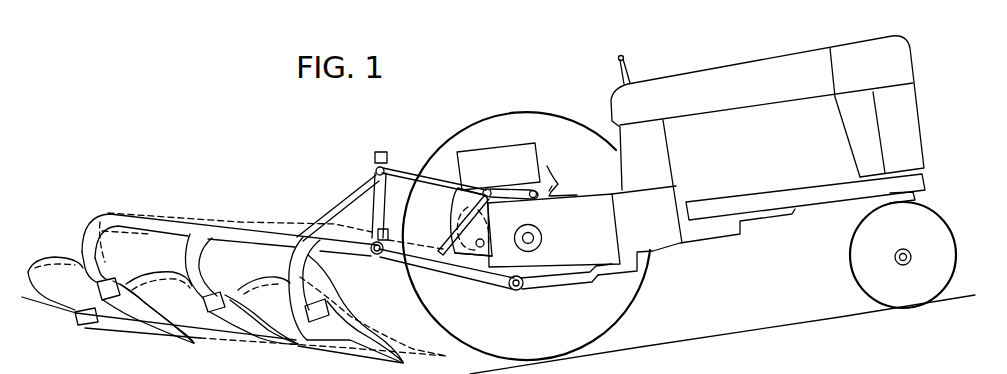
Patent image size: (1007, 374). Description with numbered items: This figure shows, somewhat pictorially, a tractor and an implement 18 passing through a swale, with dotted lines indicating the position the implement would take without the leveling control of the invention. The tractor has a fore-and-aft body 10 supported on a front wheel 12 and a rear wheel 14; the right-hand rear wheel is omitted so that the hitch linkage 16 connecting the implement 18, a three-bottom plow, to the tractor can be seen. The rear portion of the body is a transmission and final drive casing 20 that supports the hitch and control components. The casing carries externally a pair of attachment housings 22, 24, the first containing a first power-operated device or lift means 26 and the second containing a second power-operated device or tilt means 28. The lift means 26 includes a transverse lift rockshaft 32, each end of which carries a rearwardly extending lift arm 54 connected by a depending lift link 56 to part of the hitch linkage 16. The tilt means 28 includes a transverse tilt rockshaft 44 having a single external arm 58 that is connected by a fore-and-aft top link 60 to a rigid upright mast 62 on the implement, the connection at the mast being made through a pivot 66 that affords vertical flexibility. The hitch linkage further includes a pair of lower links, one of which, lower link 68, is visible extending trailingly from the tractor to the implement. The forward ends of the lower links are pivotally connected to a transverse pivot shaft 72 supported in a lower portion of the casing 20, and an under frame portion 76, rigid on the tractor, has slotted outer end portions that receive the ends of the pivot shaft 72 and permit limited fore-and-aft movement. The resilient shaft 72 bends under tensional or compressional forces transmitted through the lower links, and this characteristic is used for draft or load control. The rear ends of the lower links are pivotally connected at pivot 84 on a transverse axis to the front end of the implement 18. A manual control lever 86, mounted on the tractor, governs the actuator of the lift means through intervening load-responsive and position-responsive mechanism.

The fore-and-aft body 10 is at (738, 238).
The front wheel 12 is at (950, 259).
The rear wheel 14 is at (614, 333).
The hitch linkage 16 is at (454, 224).
The implement 18 is at (150, 209).
The transmission and final drive casing 20 is at (572, 242).
The attachment housing 22 is at (548, 166).
The attachment housing 24 is at (458, 192).
The lift means 26 is at (557, 190).
The tilt means 28 is at (465, 252).
The lift rockshaft 32 is at (537, 200).
The tilt rockshaft 44 is at (485, 246).
The lift arm 54 is at (509, 192).
The lift link 56 is at (450, 238).
The external arm 58 is at (489, 221).
The top link 60 is at (395, 177).
The mast 62 is at (377, 183).
The pivot 66 is at (377, 168).
The lower link 68 is at (397, 262).
The pivot shaft 72 is at (517, 291).
The under frame portion 76 is at (582, 278).
The pivot 84 is at (373, 253).
The control lever 86 is at (622, 55).